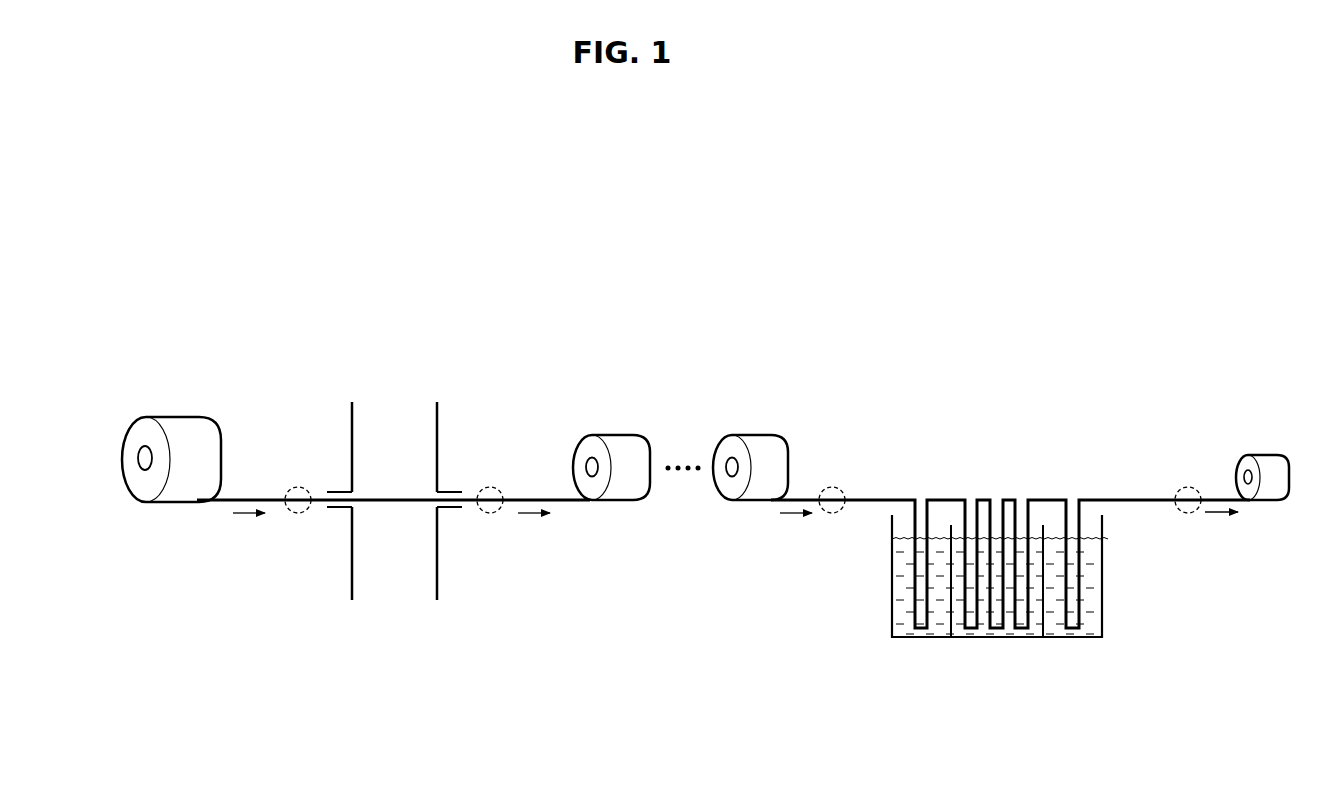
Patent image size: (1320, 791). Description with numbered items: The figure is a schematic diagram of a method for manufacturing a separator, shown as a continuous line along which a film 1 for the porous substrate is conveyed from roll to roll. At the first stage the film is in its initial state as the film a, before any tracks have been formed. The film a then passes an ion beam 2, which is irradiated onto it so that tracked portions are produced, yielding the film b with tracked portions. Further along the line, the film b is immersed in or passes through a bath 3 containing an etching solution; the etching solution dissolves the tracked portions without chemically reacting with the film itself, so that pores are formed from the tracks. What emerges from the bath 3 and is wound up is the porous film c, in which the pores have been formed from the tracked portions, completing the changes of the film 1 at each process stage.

The film 1 is at (248, 498).
The ion beam 2 is at (455, 570).
The bath 3 is at (1121, 569).
The film before tracks are formed a is at (297, 488).
The film with tracked portions b is at (489, 488).
The porous film c is at (1187, 488).